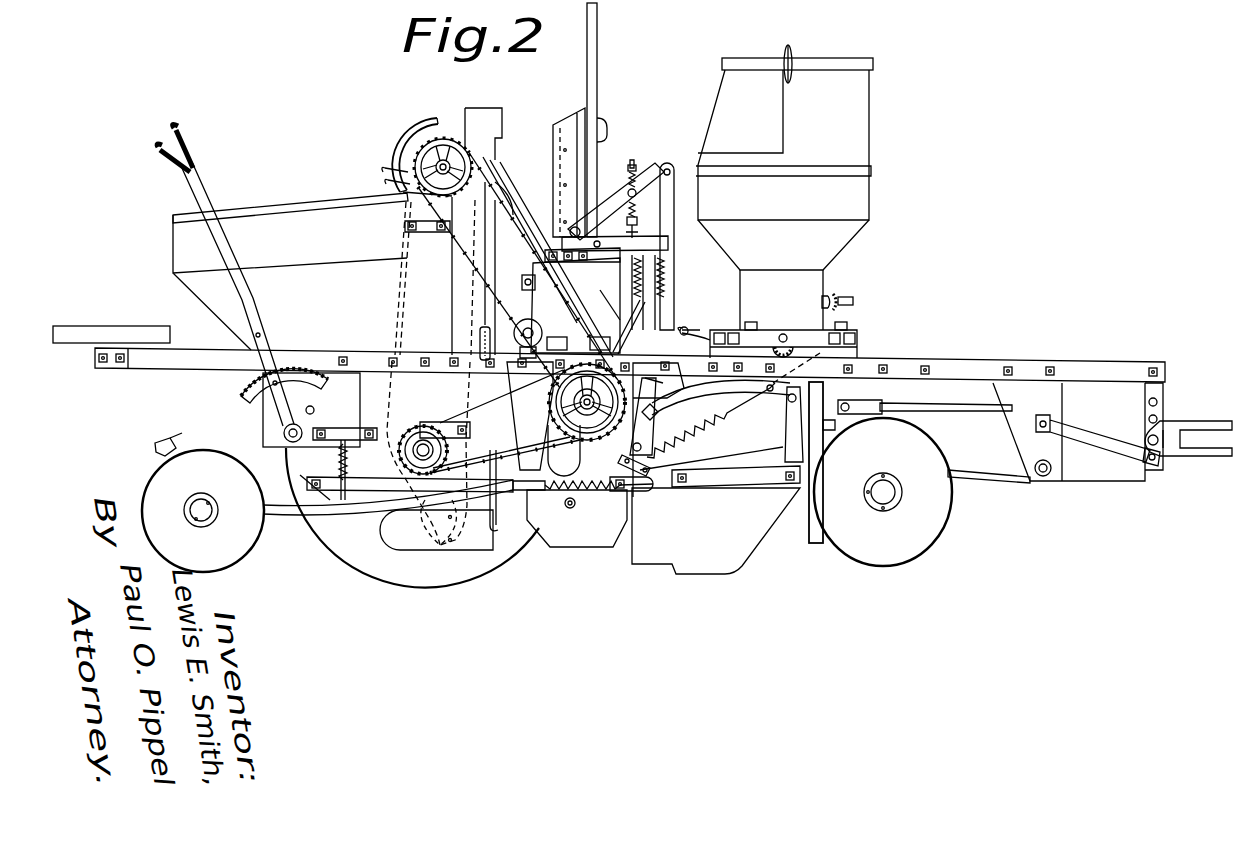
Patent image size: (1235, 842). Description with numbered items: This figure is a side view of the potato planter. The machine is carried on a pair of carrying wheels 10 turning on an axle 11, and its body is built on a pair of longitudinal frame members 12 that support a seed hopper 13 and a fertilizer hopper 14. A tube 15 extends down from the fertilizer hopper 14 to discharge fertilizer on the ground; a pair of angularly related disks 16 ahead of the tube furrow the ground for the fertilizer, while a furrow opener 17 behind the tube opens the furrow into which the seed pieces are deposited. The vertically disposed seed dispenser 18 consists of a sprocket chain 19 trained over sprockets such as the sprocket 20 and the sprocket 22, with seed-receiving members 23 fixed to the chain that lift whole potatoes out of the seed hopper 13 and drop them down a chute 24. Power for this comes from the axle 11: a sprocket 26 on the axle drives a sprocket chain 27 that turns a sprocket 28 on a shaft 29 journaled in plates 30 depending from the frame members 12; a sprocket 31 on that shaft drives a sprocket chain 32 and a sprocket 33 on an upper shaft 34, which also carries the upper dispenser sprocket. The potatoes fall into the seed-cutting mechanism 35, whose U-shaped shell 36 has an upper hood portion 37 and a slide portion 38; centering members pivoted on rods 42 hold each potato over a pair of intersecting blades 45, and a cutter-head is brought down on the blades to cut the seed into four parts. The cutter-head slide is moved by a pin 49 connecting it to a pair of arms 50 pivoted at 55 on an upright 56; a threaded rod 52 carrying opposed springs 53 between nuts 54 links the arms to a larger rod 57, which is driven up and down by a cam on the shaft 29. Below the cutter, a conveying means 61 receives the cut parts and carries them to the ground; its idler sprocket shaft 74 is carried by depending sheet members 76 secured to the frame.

The carrying wheels 10 is at (384, 578).
The axle 11 is at (411, 452).
The longitudinal frame members 12 is at (180, 368).
The seed hopper 13 is at (305, 215).
The fertilizer hopper 14 is at (862, 150).
The tube 15 is at (812, 548).
The angularly related disks 16 is at (896, 553).
The furrow opener 17 is at (722, 575).
The seed dispenser 18 is at (403, 136).
The sprocket chain 19 is at (398, 299).
The sprocket 20 is at (400, 425).
The sprocket 22 is at (432, 542).
The seed-receiving members 23 is at (385, 168).
The chute 24 is at (520, 208).
The sprocket 26 is at (447, 422).
The sprocket chain 27 is at (490, 450).
The sprocket 28 is at (578, 447).
The shaft 29 is at (570, 410).
The plates 30 is at (540, 385).
The sprocket 31 is at (490, 360).
The sprocket chain 32 is at (470, 265).
The sprocket 33 is at (452, 240).
The shaft 34 is at (480, 160).
The seed-cutting mechanism 35 is at (590, 302).
The U-shaped shell 36 is at (525, 318).
The upper hood portion 37 is at (595, 250).
The slide portion 38 is at (598, 156).
The rods 42 is at (522, 282).
The intersecting blades 45 is at (578, 318).
The pin 49 is at (570, 230).
The arms 50 is at (618, 210).
The threaded rod 52 is at (636, 190).
The opposed springs 53 is at (628, 180).
The nuts 54 is at (628, 168).
The pivot 55 is at (668, 166).
The upright 56 is at (674, 202).
The larger rod 57 is at (638, 312).
The conveying means 61 is at (587, 555).
The shaft 74 is at (576, 504).
The sheet members 76 is at (545, 540).